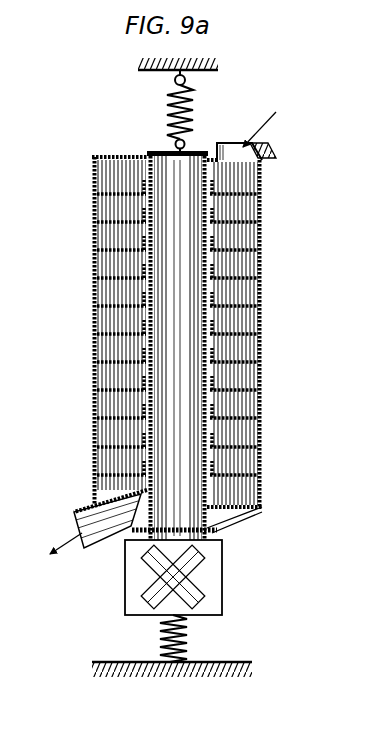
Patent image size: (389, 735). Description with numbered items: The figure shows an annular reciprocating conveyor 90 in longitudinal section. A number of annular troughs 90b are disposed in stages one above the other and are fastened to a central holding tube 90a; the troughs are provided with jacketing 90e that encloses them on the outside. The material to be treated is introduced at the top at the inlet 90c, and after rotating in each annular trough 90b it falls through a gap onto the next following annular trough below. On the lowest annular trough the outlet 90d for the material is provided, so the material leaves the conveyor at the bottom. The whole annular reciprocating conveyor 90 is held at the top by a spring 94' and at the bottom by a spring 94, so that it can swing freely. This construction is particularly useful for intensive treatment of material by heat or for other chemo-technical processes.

The annular reciprocating conveyor 90 is at (110, 267).
The holding tube 90a is at (158, 153).
The annular troughs 90b is at (243, 303).
The material inlet 90c is at (264, 156).
The outlet 90d is at (83, 512).
The jacketing 90e is at (262, 395).
The spring 94 is at (150, 638).
The spring 94' is at (200, 111).